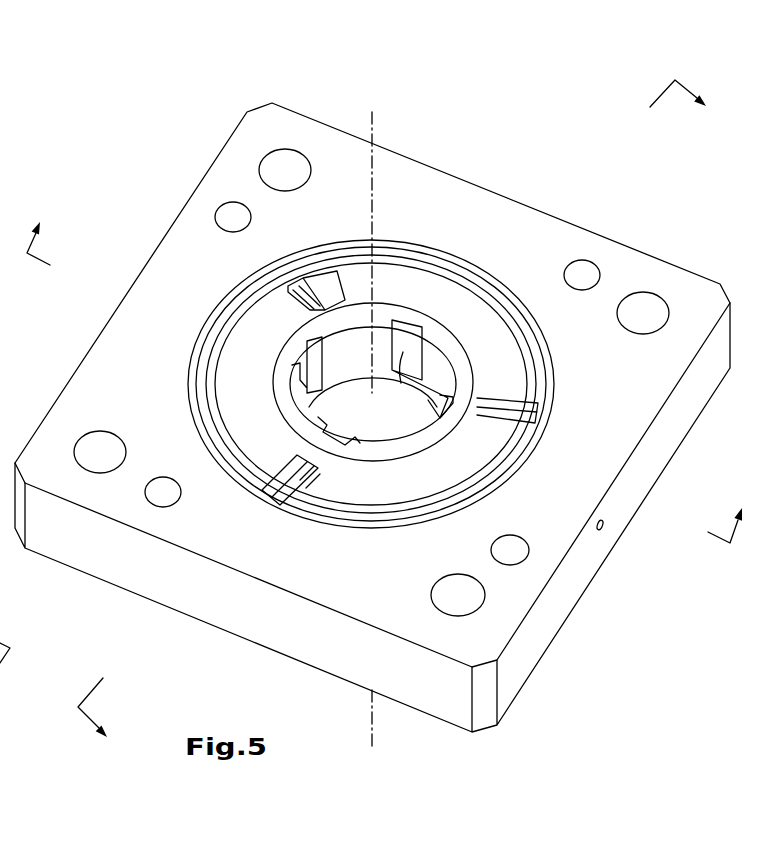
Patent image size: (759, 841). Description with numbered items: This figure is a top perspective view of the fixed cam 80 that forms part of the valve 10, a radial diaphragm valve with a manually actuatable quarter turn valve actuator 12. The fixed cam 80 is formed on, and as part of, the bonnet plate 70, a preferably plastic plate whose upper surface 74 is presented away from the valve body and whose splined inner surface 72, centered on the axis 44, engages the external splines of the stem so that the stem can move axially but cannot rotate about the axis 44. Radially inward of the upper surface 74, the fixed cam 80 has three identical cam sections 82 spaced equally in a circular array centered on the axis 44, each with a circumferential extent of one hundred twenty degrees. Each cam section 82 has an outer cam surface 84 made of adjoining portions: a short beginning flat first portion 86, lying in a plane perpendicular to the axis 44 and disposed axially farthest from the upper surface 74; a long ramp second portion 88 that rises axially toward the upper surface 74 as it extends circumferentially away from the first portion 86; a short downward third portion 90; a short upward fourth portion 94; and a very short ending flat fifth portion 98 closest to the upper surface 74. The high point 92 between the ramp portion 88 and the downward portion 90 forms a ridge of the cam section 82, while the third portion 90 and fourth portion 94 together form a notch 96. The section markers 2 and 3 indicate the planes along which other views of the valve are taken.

The valve 10 is at (535, 115).
The valve actuator 12 is at (563, 154).
The axis 44 is at (380, 170).
The bonnet plate 70 is at (192, 624).
The splined inner surface 72 is at (530, 455).
The upper surface 74 is at (607, 420).
The fixed cam 80 is at (172, 340).
The cam sections 82 is at (450, 278).
The outer cam surface 84 is at (248, 433).
The first cam surface portion 86 is at (518, 390).
The second cam surface portion 88 is at (513, 280).
The third cam surface portion 90 is at (306, 268).
The high point 92 is at (347, 275).
The fourth cam surface portion 94 is at (325, 268).
The notch 96 is at (317, 277).
The fifth cam surface portion 98 is at (290, 297).
The section line 2- 2 is at (391, 368).
The section line 3- 3 is at (400, 421).